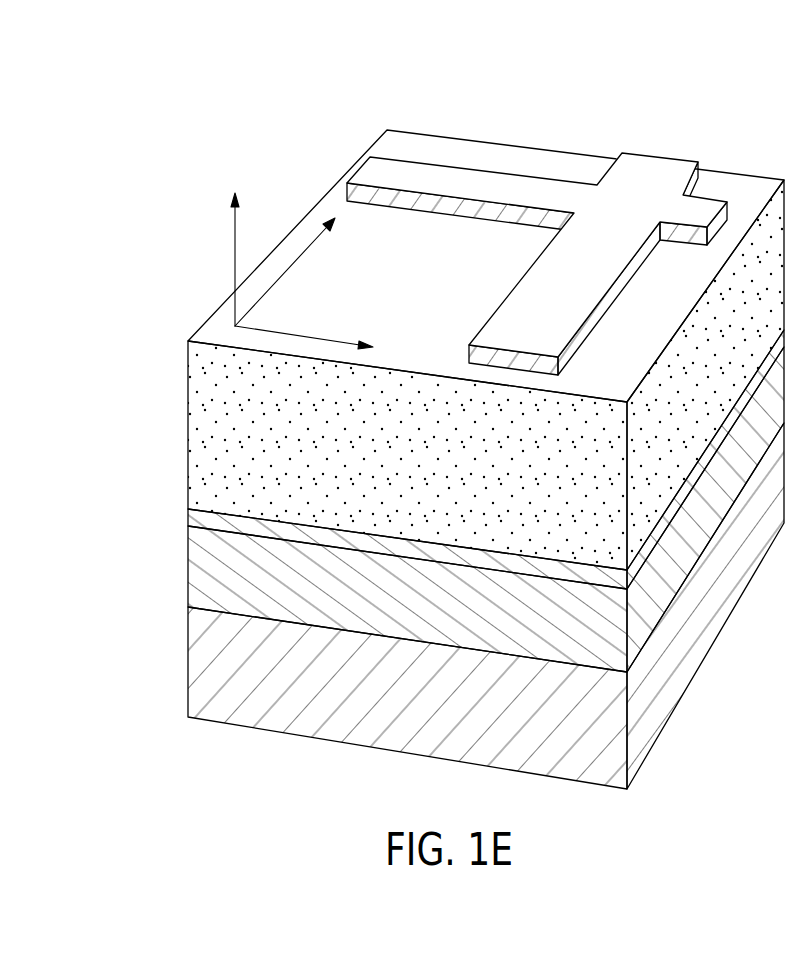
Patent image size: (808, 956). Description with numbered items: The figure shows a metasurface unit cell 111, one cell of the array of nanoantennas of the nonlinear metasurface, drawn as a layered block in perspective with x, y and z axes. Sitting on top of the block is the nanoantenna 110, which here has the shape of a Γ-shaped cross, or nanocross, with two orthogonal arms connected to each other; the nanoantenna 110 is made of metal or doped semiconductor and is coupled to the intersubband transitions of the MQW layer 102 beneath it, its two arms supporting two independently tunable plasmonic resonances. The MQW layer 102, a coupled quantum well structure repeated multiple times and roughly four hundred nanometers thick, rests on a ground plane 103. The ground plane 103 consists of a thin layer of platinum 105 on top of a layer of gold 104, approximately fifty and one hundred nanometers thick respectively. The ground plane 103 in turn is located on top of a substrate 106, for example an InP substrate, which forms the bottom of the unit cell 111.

The MQW layer 102 is at (188, 430).
The ground plane 103 is at (447, 501).
The layer of gold 104 is at (290, 607).
The layer of platinum 105 is at (337, 537).
The substrate 106 is at (188, 672).
The nanoantenna 110 is at (662, 167).
The metasurface unit cell 111 is at (311, 124).